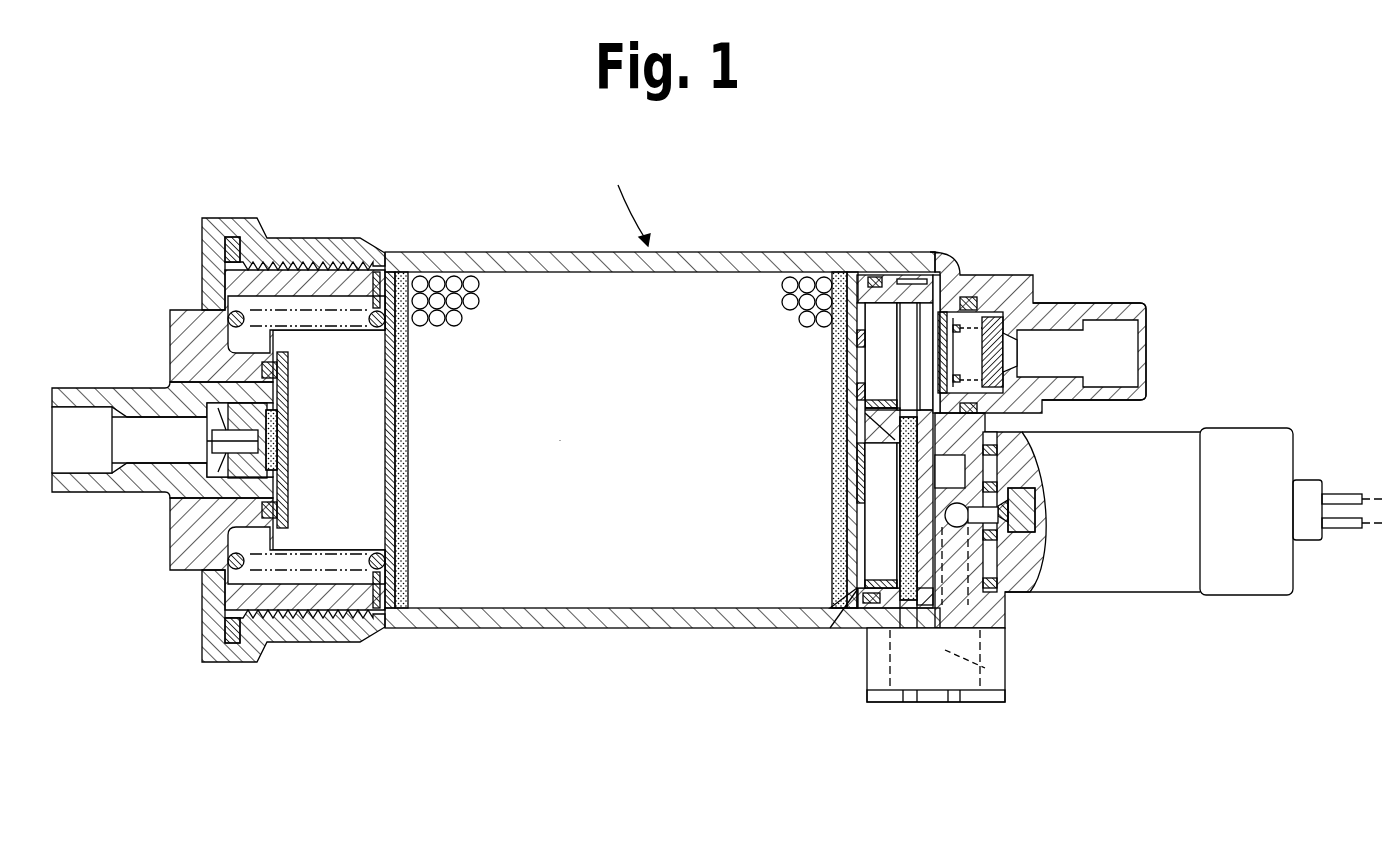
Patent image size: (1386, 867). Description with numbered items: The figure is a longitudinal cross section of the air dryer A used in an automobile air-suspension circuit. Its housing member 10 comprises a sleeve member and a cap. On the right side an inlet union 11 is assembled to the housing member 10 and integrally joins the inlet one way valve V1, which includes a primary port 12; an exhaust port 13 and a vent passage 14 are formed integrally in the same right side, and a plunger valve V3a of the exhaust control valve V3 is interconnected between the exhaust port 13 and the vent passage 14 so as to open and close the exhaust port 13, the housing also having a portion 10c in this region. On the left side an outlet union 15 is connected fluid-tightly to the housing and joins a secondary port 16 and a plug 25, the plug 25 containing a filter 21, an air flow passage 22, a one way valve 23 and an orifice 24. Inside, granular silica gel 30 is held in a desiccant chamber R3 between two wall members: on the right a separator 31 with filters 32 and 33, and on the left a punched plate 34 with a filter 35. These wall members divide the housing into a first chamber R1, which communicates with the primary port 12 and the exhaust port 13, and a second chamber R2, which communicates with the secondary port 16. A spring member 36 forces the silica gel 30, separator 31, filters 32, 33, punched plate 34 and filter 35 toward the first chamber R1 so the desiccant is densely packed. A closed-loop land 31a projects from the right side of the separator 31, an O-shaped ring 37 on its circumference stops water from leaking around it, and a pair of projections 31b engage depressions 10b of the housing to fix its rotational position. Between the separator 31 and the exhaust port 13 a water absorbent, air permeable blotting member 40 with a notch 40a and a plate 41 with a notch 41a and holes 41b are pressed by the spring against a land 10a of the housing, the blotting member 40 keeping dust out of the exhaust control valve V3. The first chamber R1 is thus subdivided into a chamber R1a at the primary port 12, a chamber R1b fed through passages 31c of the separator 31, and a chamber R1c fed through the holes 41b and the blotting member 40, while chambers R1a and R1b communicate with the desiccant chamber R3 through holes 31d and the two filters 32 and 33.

The housing member 10 is at (543, 622).
The land 10a is at (933, 600).
The depressions 10b is at (948, 262).
The passage 10c is at (1030, 472).
The inlet union 11 is at (1146, 308).
The primary port 12 is at (1060, 343).
The exhaust port 13 is at (982, 598).
The vent passage 14 is at (975, 655).
The outlet union 15 is at (88, 482).
The secondary port 16 is at (82, 425).
The filter 21 is at (285, 437).
The air flow passage 22 is at (206, 575).
The one way valve 23 is at (168, 500).
The orifice 24 is at (212, 442).
The plug 25 is at (284, 380).
The granular silica gel 30 is at (455, 287).
The separator 31 is at (893, 278).
The land 31a is at (862, 460).
The projections 31b is at (915, 282).
The passages 31c is at (870, 430).
The holes 31d is at (815, 607).
The filter 32 is at (853, 290).
The filter 33 is at (840, 290).
The punched plate 34 is at (390, 275).
The filter 35 is at (403, 278).
The spring member 36 is at (230, 314).
The O-shaped ring 37 is at (875, 278).
The blotting member 40 is at (906, 600).
The notch 40a is at (908, 358).
The plate 41 is at (868, 598).
The notch 41a is at (893, 396).
The holes 41b is at (888, 548).
The air dryer A is at (626, 195).
The first chamber R1 is at (945, 262).
The chamber R1a is at (878, 343).
The chamber R1b is at (878, 488).
The chamber R1c is at (897, 520).
The second chamber R2 is at (290, 298).
The desiccant chamber R3 is at (662, 602).
The inlet one way valve V1 is at (1040, 325).
The exhaust control valve V3 is at (1158, 445).
The plunger valve V3a is at (1036, 512).